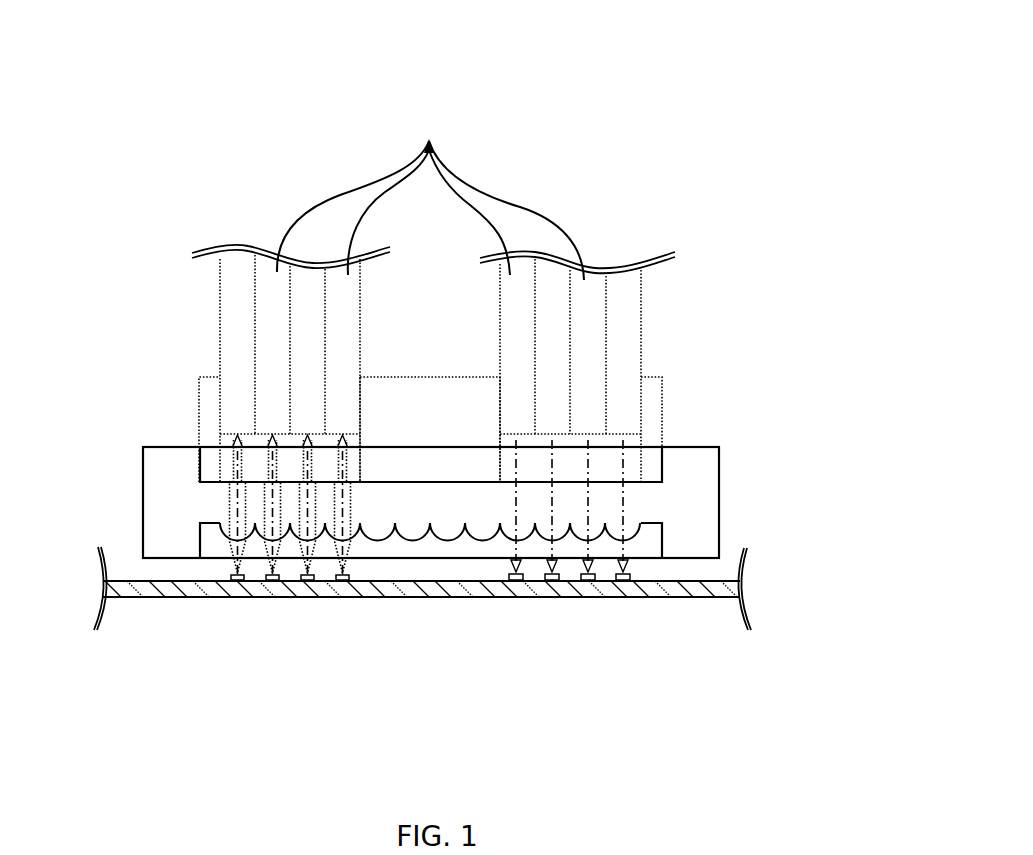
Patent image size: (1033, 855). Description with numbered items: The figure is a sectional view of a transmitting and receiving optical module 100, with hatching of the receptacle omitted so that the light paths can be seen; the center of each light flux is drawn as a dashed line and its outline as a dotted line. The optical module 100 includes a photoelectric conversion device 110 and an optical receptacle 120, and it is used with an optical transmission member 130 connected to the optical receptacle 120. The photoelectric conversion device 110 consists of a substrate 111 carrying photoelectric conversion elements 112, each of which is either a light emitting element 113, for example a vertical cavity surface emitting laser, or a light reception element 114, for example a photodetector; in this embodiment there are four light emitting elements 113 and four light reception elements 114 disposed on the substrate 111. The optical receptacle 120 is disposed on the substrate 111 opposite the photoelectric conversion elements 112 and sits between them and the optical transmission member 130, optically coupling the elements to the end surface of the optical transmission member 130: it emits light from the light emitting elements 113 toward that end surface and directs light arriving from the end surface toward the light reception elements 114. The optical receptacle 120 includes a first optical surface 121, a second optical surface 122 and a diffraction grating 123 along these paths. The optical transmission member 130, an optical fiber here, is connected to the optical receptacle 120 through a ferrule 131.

The optical module 100 is at (708, 92).
The photoelectric conversion device 110 is at (360, 697).
The substrate 111 is at (188, 588).
The photoelectric conversion element 112 is at (572, 653).
The light emitting element 113 is at (337, 581).
The light reception element 114 is at (590, 581).
The optical receptacle 120 is at (719, 458).
The first optical surface 121 is at (224, 543).
The second optical surface 122 is at (597, 482).
The diffraction grating 123 is at (255, 482).
The optical transmission member 130 is at (433, 294).
The ferrule 131 is at (445, 388).